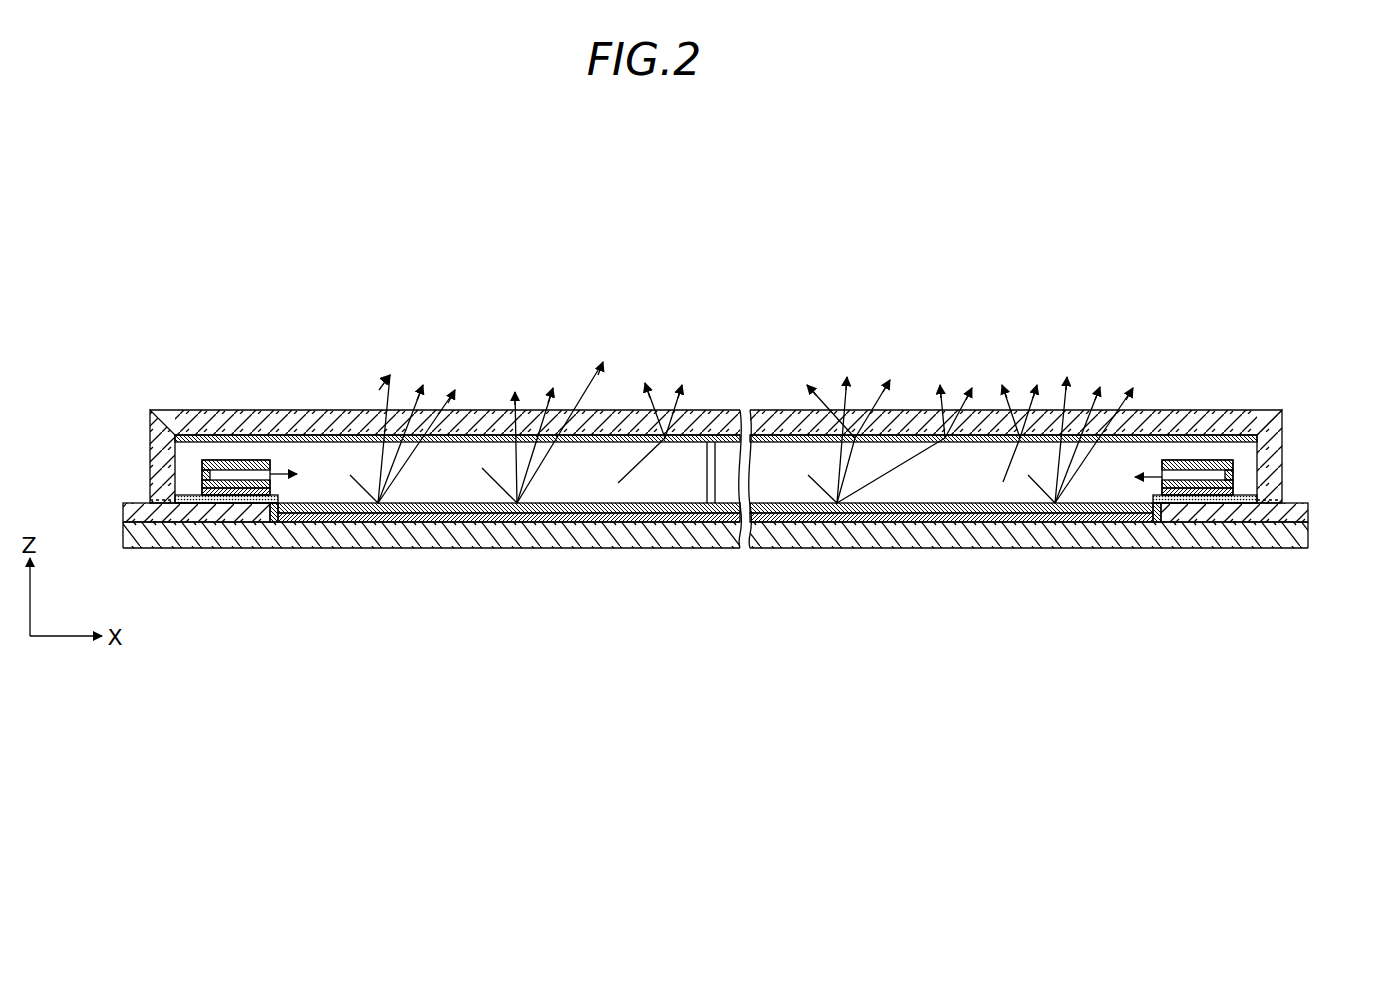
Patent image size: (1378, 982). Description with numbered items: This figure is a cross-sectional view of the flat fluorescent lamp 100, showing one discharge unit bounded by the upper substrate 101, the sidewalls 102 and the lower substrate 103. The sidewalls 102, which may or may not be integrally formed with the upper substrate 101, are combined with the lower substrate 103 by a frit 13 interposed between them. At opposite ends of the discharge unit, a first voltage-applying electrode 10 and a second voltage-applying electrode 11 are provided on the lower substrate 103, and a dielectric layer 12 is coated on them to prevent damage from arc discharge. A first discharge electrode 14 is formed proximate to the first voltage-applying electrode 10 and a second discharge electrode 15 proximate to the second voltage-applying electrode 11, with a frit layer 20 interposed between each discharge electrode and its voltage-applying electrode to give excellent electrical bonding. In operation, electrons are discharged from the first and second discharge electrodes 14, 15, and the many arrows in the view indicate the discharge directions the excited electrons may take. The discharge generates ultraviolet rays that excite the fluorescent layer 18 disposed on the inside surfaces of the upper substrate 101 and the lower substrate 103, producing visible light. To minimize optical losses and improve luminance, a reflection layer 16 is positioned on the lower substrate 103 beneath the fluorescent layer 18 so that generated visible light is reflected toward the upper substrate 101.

The flat fluorescent lamp 100 is at (667, 291).
The upper substrate 101 is at (222, 410).
The sidewalls 102 is at (149, 428).
The lower substrate 103 is at (545, 538).
The first voltage-applying electrode 10 is at (123, 512).
The second voltage-applying electrode 11 is at (1310, 515).
The dielectric layer 12 is at (187, 495).
The frit 13 is at (163, 498).
The first discharge electrode 14 is at (203, 462).
The second discharge electrode 15 is at (1222, 462).
The reflection layer 16 is at (468, 517).
The fluorescent layer 18 is at (300, 435).
The frit layer 20 is at (230, 503).